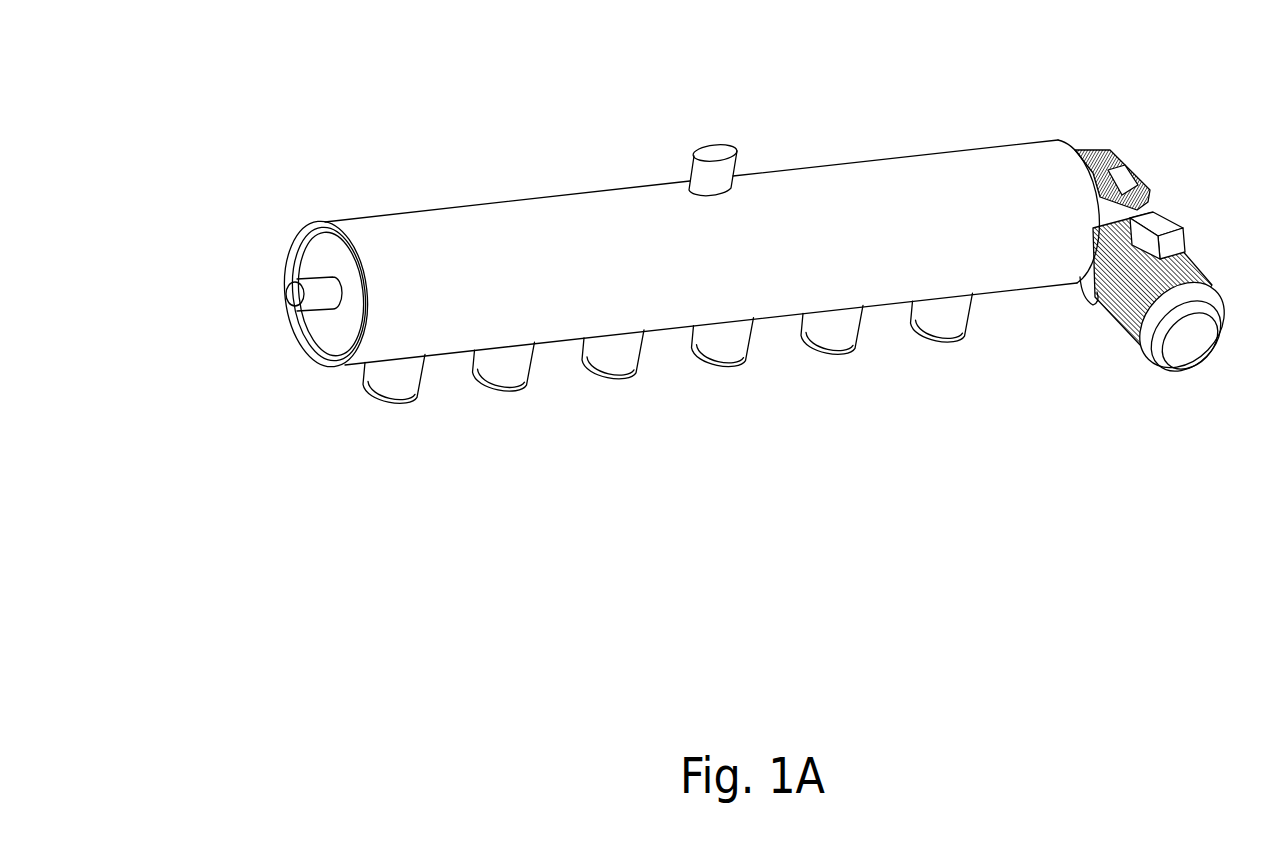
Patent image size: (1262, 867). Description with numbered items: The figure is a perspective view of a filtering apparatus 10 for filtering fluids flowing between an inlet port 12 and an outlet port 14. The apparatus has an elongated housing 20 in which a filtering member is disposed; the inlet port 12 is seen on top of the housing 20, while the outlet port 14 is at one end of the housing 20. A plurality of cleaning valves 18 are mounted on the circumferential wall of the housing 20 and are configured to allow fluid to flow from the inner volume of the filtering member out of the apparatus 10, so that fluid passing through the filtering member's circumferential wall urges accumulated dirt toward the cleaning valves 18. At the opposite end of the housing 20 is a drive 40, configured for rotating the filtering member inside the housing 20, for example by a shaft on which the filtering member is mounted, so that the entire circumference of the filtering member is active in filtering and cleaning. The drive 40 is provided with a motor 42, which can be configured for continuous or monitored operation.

The filtering apparatus 10 is at (437, 437).
The inlet port 12 is at (720, 148).
The outlet port 14 is at (285, 290).
The cleaning valve 18 is at (503, 370).
The elongated housing 20 is at (902, 230).
The drive 40 is at (1118, 156).
The motor 42 is at (1188, 343).